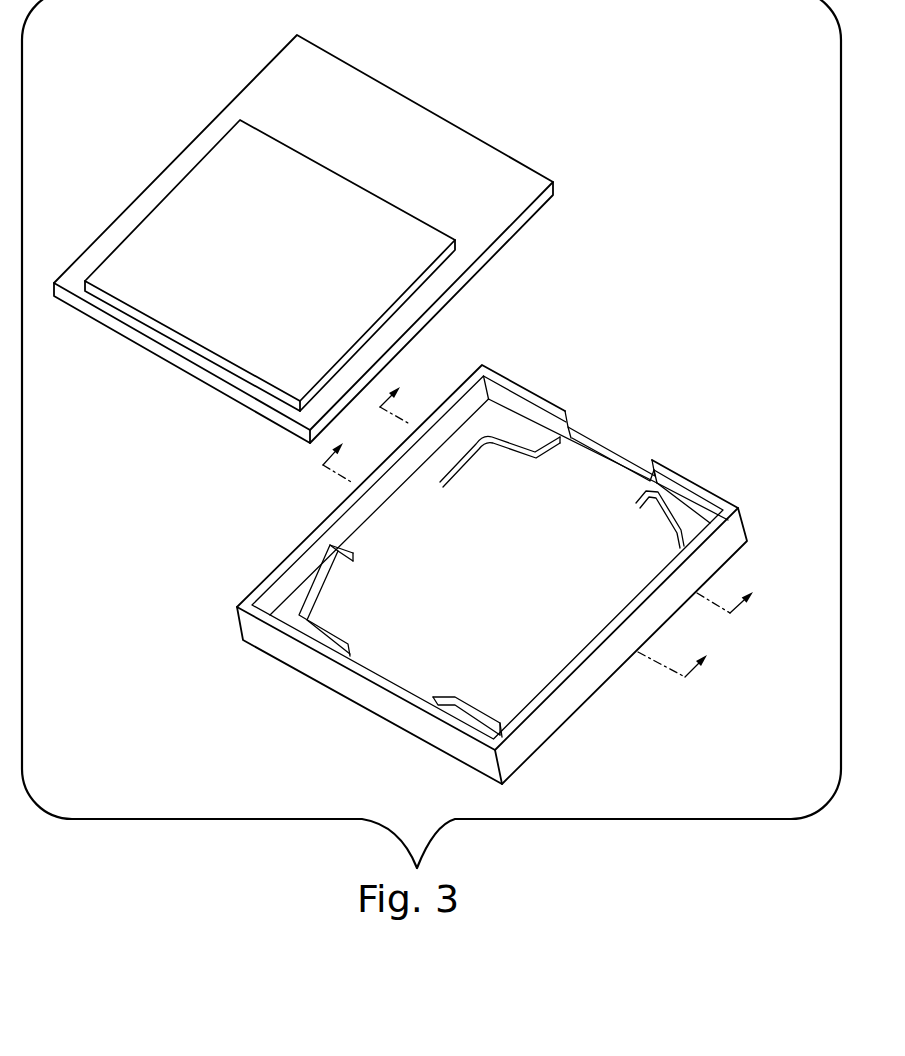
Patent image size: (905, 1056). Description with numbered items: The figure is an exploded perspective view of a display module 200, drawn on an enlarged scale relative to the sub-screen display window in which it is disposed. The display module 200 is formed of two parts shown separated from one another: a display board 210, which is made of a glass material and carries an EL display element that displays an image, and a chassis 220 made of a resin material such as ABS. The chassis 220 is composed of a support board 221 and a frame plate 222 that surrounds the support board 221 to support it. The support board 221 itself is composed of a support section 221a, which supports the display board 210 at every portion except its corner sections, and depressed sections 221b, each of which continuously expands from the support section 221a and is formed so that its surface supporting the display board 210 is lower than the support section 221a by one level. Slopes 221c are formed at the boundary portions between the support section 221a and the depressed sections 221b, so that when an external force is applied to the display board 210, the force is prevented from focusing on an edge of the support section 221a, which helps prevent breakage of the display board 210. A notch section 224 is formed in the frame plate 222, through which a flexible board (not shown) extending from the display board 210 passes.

The display module 200 is at (702, 94).
The display board 210 is at (472, 96).
The chassis 220 is at (718, 441).
The support board 221 is at (573, 483).
The support section 221a is at (574, 446).
The depressed section 221b is at (525, 430).
The slope 221c is at (463, 440).
The frame plate 222 is at (520, 400).
The notch section 224 is at (640, 444).